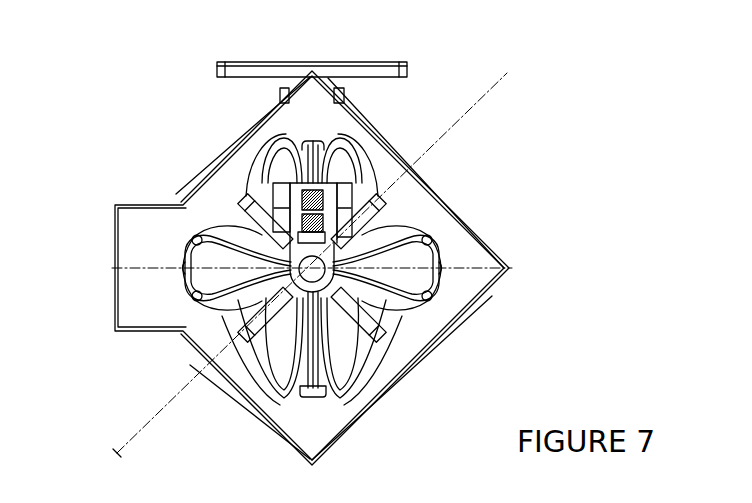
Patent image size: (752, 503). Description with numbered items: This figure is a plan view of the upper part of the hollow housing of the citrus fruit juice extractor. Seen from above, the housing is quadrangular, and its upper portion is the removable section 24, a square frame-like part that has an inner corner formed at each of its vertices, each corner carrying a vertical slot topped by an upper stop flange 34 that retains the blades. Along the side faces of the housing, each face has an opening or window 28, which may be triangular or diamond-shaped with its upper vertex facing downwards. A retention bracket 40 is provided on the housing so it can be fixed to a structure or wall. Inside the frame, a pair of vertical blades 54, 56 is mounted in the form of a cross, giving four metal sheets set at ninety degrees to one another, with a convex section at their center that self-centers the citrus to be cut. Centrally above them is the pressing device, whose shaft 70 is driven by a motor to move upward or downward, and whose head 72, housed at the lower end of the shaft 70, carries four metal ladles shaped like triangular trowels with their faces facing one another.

The removable section 24 is at (427, 197).
The opening or window 28 is at (200, 168).
The upper stop flange 34 is at (313, 142).
The retention bracket 40 is at (267, 64).
The blade 54 is at (229, 269).
The blade 56 is at (312, 345).
The shaft 70 is at (313, 268).
The head 72 is at (262, 217).